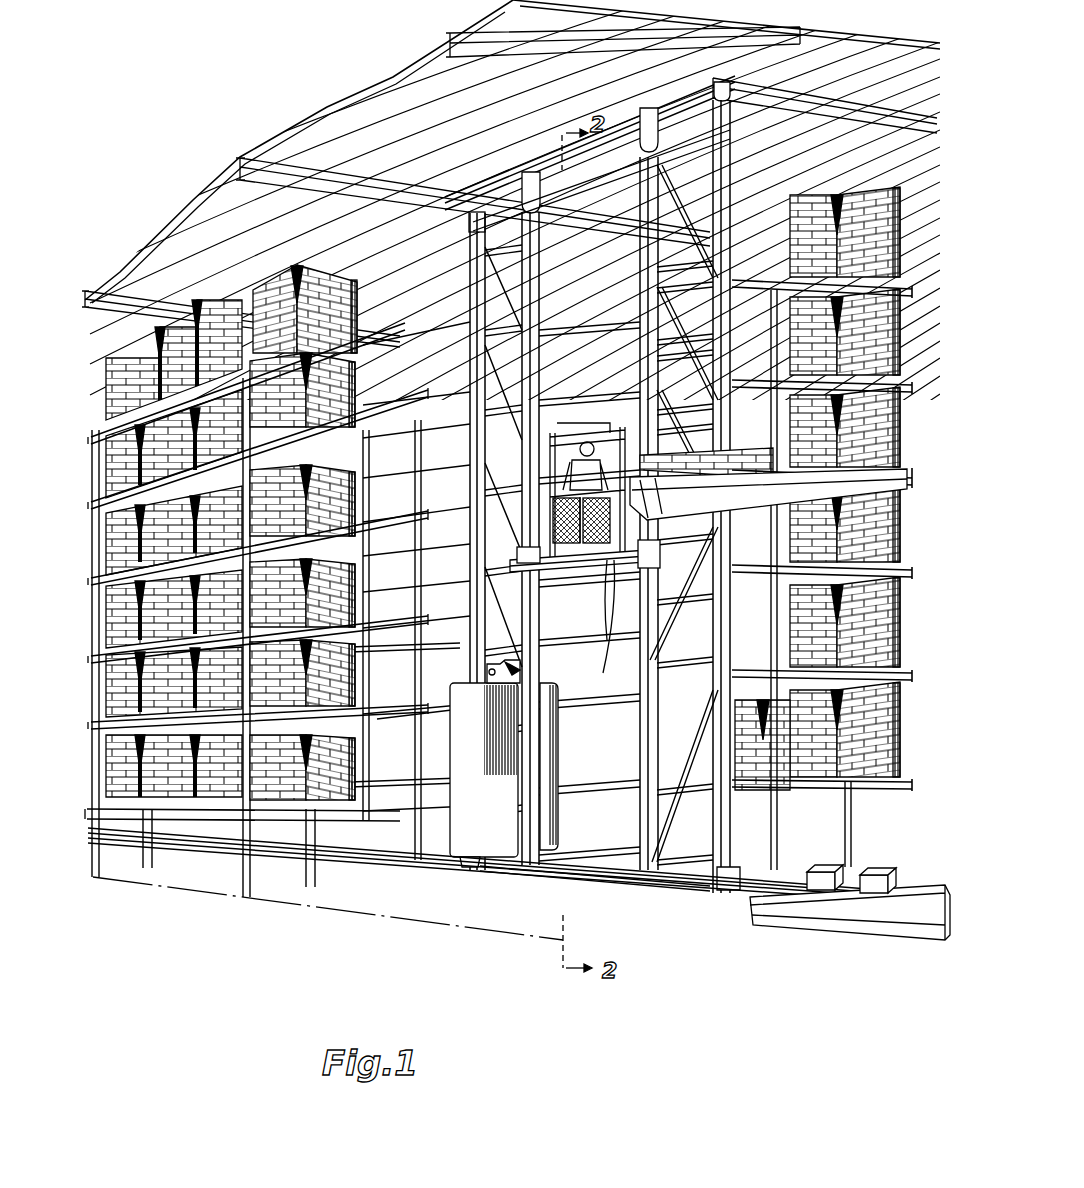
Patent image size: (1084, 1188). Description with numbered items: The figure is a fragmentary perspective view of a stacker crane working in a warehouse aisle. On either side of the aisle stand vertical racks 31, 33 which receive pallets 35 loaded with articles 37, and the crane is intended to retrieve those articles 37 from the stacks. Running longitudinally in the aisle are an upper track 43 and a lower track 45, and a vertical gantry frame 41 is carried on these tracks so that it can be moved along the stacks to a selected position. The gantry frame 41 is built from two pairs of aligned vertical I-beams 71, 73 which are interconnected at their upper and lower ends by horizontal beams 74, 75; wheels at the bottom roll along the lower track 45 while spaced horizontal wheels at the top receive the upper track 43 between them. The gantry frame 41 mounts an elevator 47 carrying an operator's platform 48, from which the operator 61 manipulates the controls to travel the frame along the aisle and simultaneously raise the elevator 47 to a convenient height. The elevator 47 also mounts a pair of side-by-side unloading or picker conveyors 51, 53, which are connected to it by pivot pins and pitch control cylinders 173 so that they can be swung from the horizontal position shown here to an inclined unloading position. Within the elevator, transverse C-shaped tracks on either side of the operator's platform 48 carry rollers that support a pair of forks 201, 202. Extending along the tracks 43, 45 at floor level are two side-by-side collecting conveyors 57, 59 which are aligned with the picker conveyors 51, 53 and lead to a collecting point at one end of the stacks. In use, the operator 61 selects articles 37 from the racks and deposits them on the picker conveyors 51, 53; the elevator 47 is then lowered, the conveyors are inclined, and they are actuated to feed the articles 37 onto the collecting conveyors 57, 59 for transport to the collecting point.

The vertical rack 31 is at (313, 264).
The vertical rack 33 is at (832, 195).
The pallet 35 is at (367, 347).
The article 37 is at (520, 477).
The gantry frame 41 is at (561, 496).
The upper track 43 is at (772, 36).
The lower track 45 is at (555, 880).
The elevator 47 is at (589, 608).
The operator's platform 48 is at (592, 574).
The unloading or picker conveyor 51 is at (768, 494).
The unloading or picker conveyor 53 is at (895, 468).
The collecting conveyor 57 is at (828, 905).
The collecting conveyor 59 is at (795, 890).
The operator 61 is at (580, 432).
The vertical I-beam 71 is at (652, 176).
The vertical I-beam 73 is at (735, 193).
The upper horizontal beam 74 is at (598, 163).
The lower horizontal beam 75 is at (578, 865).
The pitch control cylinder 173 is at (656, 562).
The fork 201 is at (548, 570).
The fork 202 is at (602, 617).